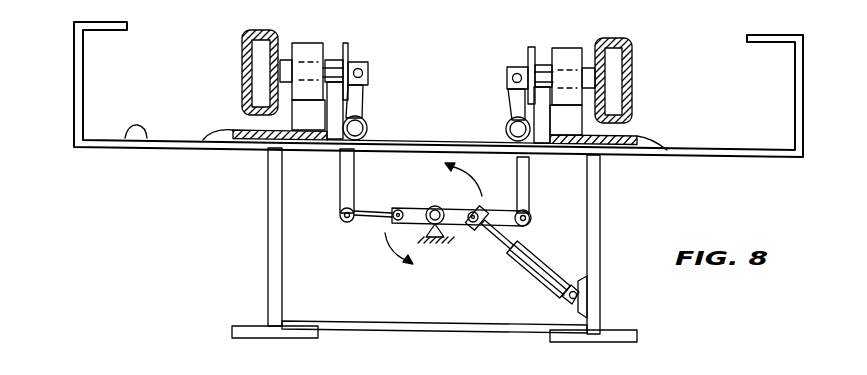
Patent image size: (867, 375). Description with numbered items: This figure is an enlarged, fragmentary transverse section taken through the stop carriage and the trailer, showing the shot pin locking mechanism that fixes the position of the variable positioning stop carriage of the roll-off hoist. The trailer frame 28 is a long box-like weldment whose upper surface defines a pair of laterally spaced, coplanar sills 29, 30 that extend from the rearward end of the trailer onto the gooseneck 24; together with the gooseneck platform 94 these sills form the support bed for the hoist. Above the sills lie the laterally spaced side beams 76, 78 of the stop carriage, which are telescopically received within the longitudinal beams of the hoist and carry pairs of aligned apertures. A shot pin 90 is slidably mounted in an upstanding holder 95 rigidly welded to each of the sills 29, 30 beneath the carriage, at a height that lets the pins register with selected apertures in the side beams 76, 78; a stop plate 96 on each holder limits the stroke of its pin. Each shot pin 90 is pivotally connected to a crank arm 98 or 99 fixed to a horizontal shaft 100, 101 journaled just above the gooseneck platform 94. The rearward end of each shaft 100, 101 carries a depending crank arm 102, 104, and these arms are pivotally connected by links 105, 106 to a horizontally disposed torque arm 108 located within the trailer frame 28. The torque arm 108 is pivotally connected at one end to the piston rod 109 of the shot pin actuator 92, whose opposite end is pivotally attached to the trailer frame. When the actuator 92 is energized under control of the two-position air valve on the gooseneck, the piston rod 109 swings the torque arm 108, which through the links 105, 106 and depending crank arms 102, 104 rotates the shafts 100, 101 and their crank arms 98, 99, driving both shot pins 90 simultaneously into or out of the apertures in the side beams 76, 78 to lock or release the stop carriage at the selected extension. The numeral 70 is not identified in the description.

The gooseneck 24 is at (64, 97).
The trailer frame 28 is at (268, 226).
The sill 29 is at (205, 140).
The sill 30 is at (665, 150).
The wheel assembly 70 is at (439, 4).
The side beam 76 is at (240, 46).
The side beam 78 is at (632, 68).
The shot pin 90 is at (332, 62).
The shot pin actuator 92 is at (555, 270).
The gooseneck platform 94 is at (127, 136).
The holder 95 is at (313, 44).
The stop plate 96 is at (348, 56).
The crank arm 98 is at (360, 105).
The crank arm 99 is at (512, 101).
The horizontal shaft 100 is at (362, 128).
The horizontal shaft 101 is at (513, 129).
The depending crank arm 102 is at (344, 194).
The depending crank arm 104 is at (528, 186).
The link 105 is at (366, 216).
The link 106 is at (502, 212).
The torque arm 108 is at (458, 218).
The piston rod 109 is at (503, 248).